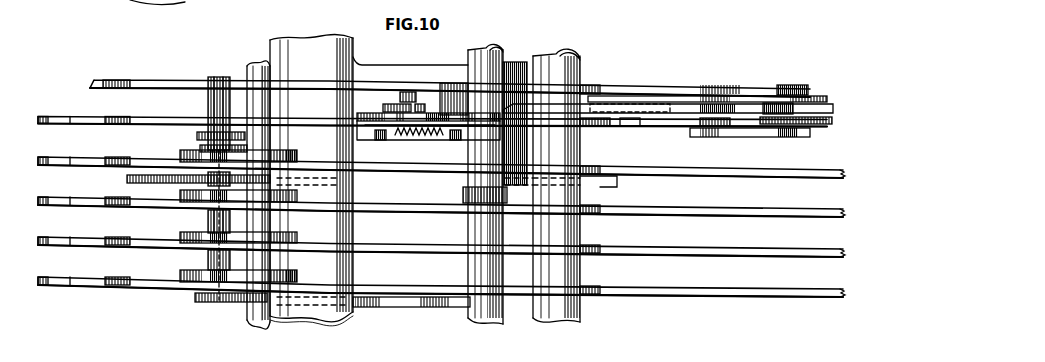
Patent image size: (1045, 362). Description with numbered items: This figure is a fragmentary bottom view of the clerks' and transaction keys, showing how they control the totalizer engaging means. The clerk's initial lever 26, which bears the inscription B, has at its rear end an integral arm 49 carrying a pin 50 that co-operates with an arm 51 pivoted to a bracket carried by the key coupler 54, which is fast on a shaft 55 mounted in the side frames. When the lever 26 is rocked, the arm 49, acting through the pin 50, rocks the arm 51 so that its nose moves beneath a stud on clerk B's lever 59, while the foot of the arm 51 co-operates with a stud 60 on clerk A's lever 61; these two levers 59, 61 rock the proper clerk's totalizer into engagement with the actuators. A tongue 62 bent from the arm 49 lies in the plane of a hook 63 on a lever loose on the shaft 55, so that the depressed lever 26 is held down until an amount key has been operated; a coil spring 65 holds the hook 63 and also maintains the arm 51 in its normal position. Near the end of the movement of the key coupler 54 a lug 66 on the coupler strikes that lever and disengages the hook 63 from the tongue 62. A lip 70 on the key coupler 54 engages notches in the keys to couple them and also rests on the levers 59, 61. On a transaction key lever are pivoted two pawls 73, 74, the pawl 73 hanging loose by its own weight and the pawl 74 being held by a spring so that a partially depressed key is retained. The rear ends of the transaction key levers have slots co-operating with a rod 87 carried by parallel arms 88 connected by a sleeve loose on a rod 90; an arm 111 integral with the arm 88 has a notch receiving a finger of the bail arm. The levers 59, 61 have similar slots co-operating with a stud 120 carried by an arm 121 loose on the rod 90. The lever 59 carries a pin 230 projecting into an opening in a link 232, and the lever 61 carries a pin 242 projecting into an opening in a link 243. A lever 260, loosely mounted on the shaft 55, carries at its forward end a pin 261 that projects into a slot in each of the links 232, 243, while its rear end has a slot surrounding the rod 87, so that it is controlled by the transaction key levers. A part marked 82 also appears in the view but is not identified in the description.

The clerk's initial lever 26 is at (834, 114).
The arm 49 is at (440, 105).
The pin 50 is at (402, 128).
The arm 51 is at (372, 126).
The key coupler 54 is at (509, 69).
The shaft 55 is at (478, 56).
The lever 59 is at (720, 129).
The stud 60 is at (398, 95).
The lever 61 is at (722, 93).
The tongue 62 is at (505, 118).
The hook 63 is at (470, 130).
The coil spring 65 is at (404, 133).
The lug 66 is at (434, 110).
The lip 70 is at (282, 317).
The pawl 73 is at (297, 162).
The pawl 74 is at (180, 157).
The cylinder 82 is at (355, 168).
The rod 87 is at (210, 215).
The parallel arms 88 is at (198, 148).
The rod 90 is at (252, 326).
The arm 111 is at (440, 307).
The stud 120 is at (213, 98).
The arm 121 is at (192, 134).
The pin 230 is at (770, 131).
The link 232 is at (700, 124).
The pin 242 is at (780, 88).
The link 243 is at (680, 98).
The lever 260 is at (617, 187).
The pin 261 is at (640, 103).